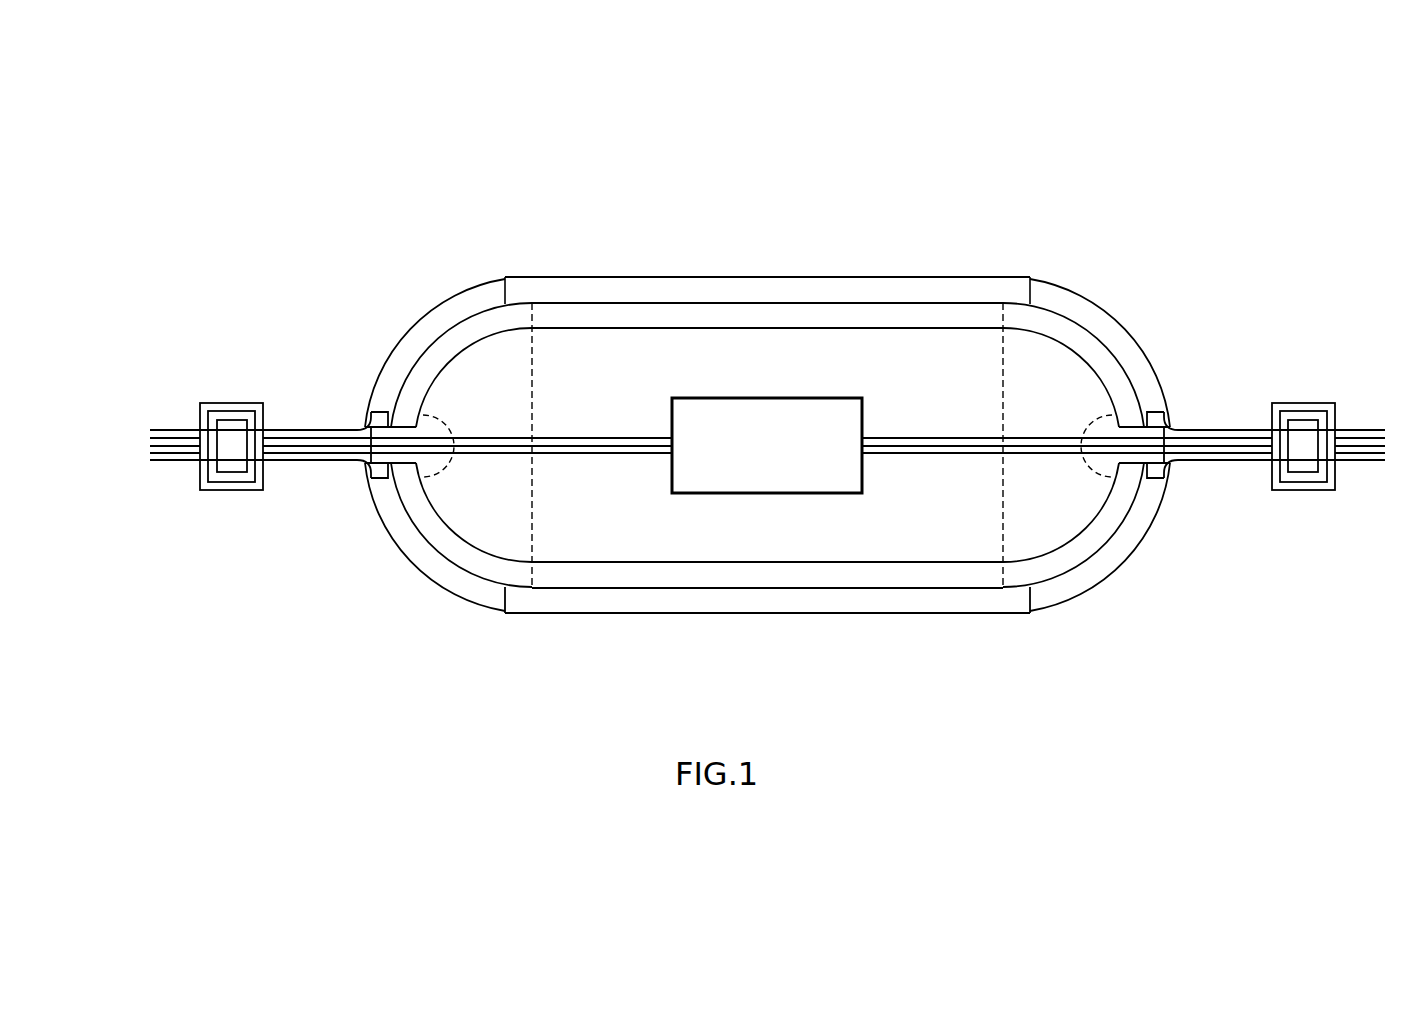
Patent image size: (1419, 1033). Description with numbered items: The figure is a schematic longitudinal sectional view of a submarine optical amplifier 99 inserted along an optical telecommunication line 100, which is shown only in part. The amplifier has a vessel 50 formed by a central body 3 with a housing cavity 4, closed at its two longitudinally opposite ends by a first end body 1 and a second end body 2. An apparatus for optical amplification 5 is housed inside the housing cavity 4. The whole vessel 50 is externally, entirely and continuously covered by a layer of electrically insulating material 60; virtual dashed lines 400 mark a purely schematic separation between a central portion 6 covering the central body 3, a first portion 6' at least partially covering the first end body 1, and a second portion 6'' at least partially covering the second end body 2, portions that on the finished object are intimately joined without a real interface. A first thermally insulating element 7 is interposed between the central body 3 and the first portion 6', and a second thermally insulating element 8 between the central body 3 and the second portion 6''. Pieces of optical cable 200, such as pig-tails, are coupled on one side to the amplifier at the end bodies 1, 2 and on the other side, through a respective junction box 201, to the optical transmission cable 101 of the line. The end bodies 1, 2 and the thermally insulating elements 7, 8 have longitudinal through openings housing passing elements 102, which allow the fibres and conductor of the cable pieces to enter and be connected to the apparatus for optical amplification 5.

The optical telecommunication line 100 is at (767, 436).
The submarine optical amplifier 99 is at (752, 454).
The vessel 50 is at (771, 211).
The layer of electrically insulating material 60 is at (851, 644).
The central portion of the layer of electrically insulating material 6 is at (744, 688).
The first portion of the layer of electrically insulating material 6' is at (1100, 529).
The second portion of the layer of electrically insulating material 6'' is at (435, 525).
The first end body 1 is at (1110, 385).
The second end body 2 is at (462, 350).
The central body 3 is at (650, 318).
The first thermally insulating element 7 is at (1108, 538).
The second thermally insulating element 8 is at (455, 566).
The housing cavity 4 is at (772, 384).
The apparatus for optical amplification 5 is at (768, 464).
The virtual dashed lines 400 is at (505, 292).
The pieces of optical cable 200 is at (767, 401).
The junction box 201 is at (233, 393).
The optical transmission cable 101 is at (163, 408).
The passing elements 102 is at (355, 471).